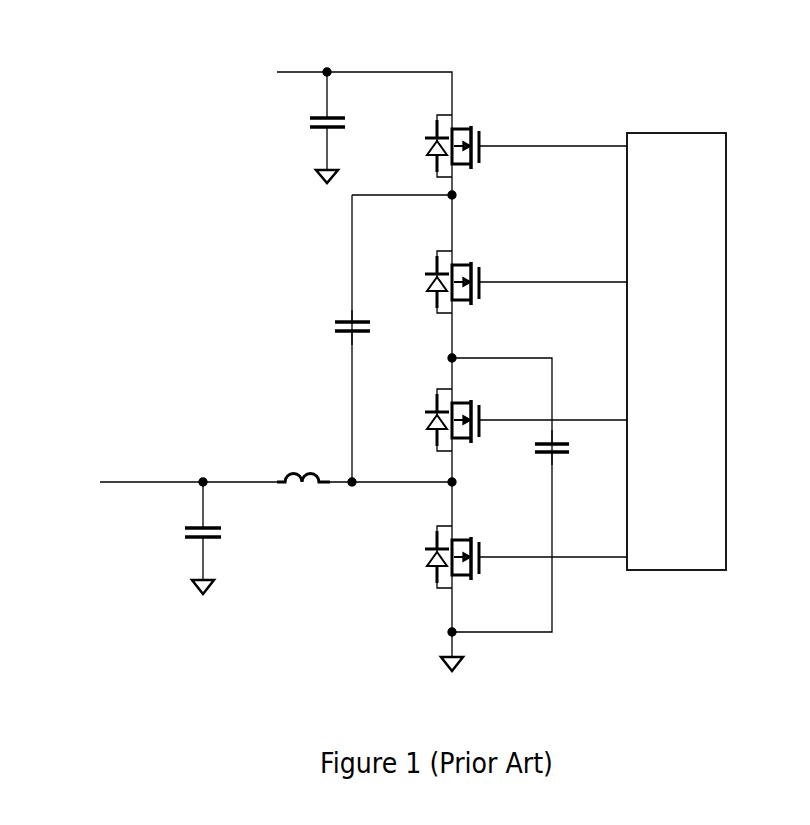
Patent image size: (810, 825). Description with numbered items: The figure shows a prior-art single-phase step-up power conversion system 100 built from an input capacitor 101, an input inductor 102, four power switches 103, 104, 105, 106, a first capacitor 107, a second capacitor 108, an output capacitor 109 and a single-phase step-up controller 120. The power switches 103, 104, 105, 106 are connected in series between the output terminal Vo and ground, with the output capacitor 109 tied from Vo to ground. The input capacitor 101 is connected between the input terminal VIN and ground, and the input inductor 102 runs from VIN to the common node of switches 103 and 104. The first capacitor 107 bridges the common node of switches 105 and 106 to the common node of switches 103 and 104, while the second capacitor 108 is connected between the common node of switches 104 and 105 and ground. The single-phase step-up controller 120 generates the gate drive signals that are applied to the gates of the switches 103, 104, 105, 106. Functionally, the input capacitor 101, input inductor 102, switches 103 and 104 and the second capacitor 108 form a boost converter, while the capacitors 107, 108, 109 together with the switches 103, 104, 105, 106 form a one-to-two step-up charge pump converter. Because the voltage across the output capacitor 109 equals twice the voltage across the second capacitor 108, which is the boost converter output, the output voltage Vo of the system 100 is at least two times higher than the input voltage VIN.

The single-phase step-up power conversion system 100 is at (127, 63).
The input capacitor 101 is at (181, 533).
The input inductor 102 is at (284, 471).
The power switch 103 is at (425, 553).
The power switch 104 is at (425, 410).
The power switch 105 is at (483, 292).
The power switch 106 is at (483, 150).
The first capacitor 107 is at (340, 319).
The second capacitor 108 is at (565, 456).
The output capacitor 109 is at (338, 133).
The single-phase step-up controller 120 is at (626, 133).